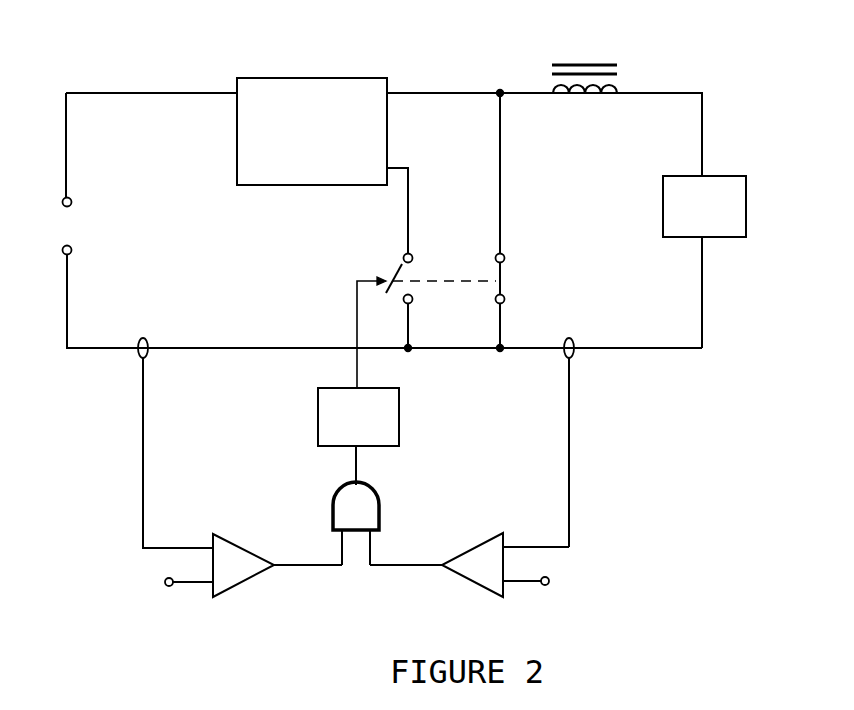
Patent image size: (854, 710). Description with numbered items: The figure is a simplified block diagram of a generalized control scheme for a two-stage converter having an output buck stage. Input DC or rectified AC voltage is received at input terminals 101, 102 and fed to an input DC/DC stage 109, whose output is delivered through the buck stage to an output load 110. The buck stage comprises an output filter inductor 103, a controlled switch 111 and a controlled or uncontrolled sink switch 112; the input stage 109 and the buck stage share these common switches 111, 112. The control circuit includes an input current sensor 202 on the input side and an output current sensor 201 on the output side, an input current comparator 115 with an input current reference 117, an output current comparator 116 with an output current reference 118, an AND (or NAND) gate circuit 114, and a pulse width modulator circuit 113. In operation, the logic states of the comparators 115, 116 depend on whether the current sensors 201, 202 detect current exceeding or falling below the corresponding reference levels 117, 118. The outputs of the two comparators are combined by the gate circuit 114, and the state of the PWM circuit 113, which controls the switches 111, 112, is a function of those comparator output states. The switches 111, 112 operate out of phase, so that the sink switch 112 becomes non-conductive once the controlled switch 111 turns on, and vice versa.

The input terminal 101 is at (80, 201).
The input terminal 102 is at (80, 249).
The output filter inductor 103 is at (624, 68).
The input DC/DC stage 109 is at (334, 65).
The output load 110 is at (750, 193).
The controlled switch 111 is at (390, 260).
The sink switch 112 is at (517, 270).
The pulse width modulator circuit 113 is at (408, 425).
The AND gate circuit 114 is at (325, 497).
The input current comparator 115 is at (246, 592).
The output current comparator 116 is at (460, 585).
The input current reference 117 is at (176, 596).
The output current reference 118 is at (537, 592).
The output current sensor 201 is at (580, 362).
The input current sensor 202 is at (132, 362).